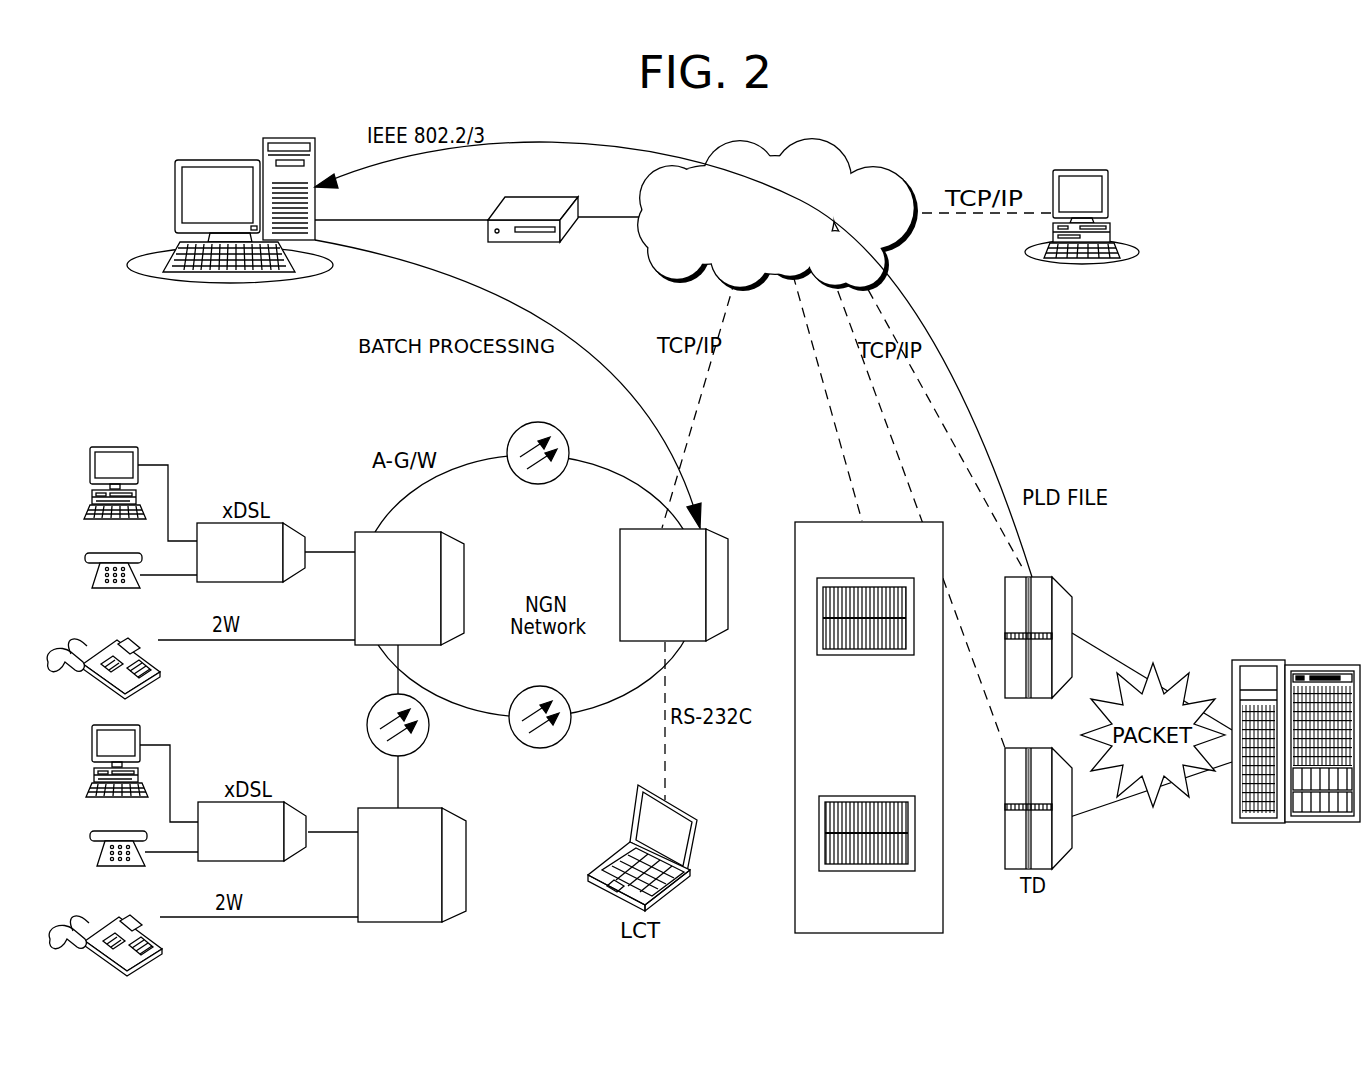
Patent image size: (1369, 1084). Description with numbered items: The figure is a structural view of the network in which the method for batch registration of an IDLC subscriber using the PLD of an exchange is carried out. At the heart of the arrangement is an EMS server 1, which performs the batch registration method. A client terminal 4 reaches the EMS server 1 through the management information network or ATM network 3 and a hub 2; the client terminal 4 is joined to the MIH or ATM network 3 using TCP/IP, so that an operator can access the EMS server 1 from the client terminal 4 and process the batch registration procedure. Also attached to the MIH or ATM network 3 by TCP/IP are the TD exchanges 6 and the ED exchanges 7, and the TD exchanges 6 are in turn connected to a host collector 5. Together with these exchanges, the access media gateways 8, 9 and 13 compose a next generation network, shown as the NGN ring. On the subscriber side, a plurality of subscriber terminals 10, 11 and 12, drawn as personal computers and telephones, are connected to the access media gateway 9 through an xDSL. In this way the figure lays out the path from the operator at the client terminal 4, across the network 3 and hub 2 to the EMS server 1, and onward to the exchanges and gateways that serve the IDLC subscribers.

The EMS server 1 is at (288, 138).
The hub 2 is at (545, 197).
The MIH or ATM network 3 is at (812, 138).
The client terminal 4 is at (1082, 170).
The host collector 5 is at (1318, 660).
The TD exchange 6 is at (1072, 598).
The ED exchange 7 is at (943, 827).
The access media gateway 8 is at (636, 529).
The access media gateway 9 is at (431, 532).
The subscriber terminal 10 is at (90, 478).
The subscriber terminal 11 is at (88, 565).
The subscriber terminal 12 is at (95, 625).
The access media gateway 13 is at (430, 808).